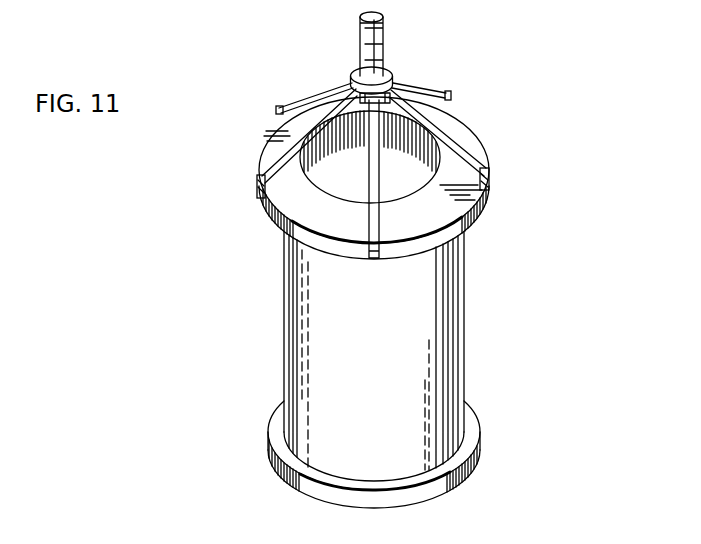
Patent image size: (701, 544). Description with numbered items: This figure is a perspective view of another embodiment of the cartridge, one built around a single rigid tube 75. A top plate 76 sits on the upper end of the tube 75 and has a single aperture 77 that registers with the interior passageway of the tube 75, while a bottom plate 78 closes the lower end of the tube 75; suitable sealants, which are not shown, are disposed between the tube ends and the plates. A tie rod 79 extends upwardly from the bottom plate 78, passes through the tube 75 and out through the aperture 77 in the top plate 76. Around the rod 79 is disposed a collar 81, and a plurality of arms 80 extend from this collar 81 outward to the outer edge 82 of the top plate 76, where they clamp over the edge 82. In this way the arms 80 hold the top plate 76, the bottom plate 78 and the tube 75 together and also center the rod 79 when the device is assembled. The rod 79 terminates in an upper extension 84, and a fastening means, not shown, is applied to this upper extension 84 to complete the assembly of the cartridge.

The rigid tube 75 is at (455, 320).
The top plate 76 is at (460, 121).
The aperture 77 is at (397, 193).
The bottom plate 78 is at (470, 428).
The tie rod 79 is at (382, 157).
The arms 80 is at (265, 171).
The collar 81 is at (389, 72).
The outer edge 82 is at (283, 225).
The upper extension 84 is at (383, 37).